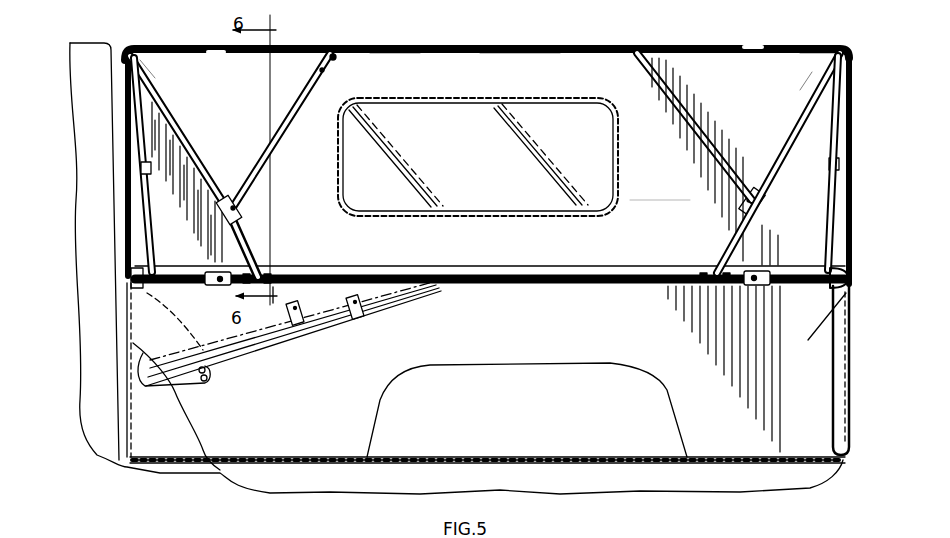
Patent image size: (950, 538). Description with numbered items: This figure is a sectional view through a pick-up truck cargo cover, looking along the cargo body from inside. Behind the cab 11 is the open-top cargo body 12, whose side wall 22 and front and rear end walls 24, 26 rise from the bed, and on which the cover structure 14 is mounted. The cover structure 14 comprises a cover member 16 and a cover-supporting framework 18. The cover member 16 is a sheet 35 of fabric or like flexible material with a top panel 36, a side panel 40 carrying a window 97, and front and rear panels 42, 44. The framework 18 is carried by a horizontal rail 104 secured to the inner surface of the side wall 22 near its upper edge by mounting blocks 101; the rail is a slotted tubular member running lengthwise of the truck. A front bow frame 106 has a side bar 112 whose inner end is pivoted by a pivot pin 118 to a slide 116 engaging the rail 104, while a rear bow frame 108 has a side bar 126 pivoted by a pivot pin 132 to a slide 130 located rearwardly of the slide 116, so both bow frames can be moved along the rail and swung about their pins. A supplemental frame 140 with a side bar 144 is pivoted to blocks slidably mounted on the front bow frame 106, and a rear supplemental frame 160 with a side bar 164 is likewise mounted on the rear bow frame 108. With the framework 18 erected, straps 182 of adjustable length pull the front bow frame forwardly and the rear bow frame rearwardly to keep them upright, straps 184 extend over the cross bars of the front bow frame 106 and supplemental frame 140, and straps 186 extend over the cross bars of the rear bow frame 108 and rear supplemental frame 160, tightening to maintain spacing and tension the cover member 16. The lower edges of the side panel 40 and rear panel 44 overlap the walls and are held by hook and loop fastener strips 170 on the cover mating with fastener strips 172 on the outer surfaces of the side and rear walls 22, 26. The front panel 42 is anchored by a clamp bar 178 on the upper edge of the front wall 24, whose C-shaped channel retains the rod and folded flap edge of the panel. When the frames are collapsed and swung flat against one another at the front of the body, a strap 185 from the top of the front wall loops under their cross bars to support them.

The cab 11 is at (90, 46).
The cargo body 12 is at (853, 441).
The cover structure 14 is at (749, 45).
The cover member 16 is at (440, 47).
The cover-supporting framework 18 is at (803, 90).
The side wall 22 is at (661, 358).
The front end wall 24 is at (133, 343).
The rear end wall 26 is at (850, 374).
The sheet 35 is at (485, 47).
The top panel 36 is at (380, 50).
The side panel 40 is at (677, 194).
The front panel 42 is at (125, 100).
The rear panel 44 is at (854, 163).
The window 97 is at (494, 179).
The mounting blocks 101 is at (213, 288).
The rail 104 is at (588, 272).
The front bow frame 106 is at (158, 80).
The rear bow frame 108 is at (787, 135).
The side bar 112 is at (182, 135).
The slide 116 is at (287, 271).
The pivot pin 118 is at (268, 268).
The side bar 126 is at (773, 183).
The slide 130 is at (700, 286).
The pivot pin 132 is at (714, 266).
The supplemental frame 140 is at (310, 72).
The side bar 144 is at (326, 73).
The rear supplemental frame 160 is at (682, 80).
The side bar 164 is at (687, 128).
The fastener strips 170 is at (838, 285).
The fastener strips 172 is at (811, 332).
The clamp bar 178 is at (125, 258).
The straps 182 is at (150, 203).
The straps 184 is at (330, 47).
The strap 185 is at (128, 311).
The straps 186 is at (818, 47).